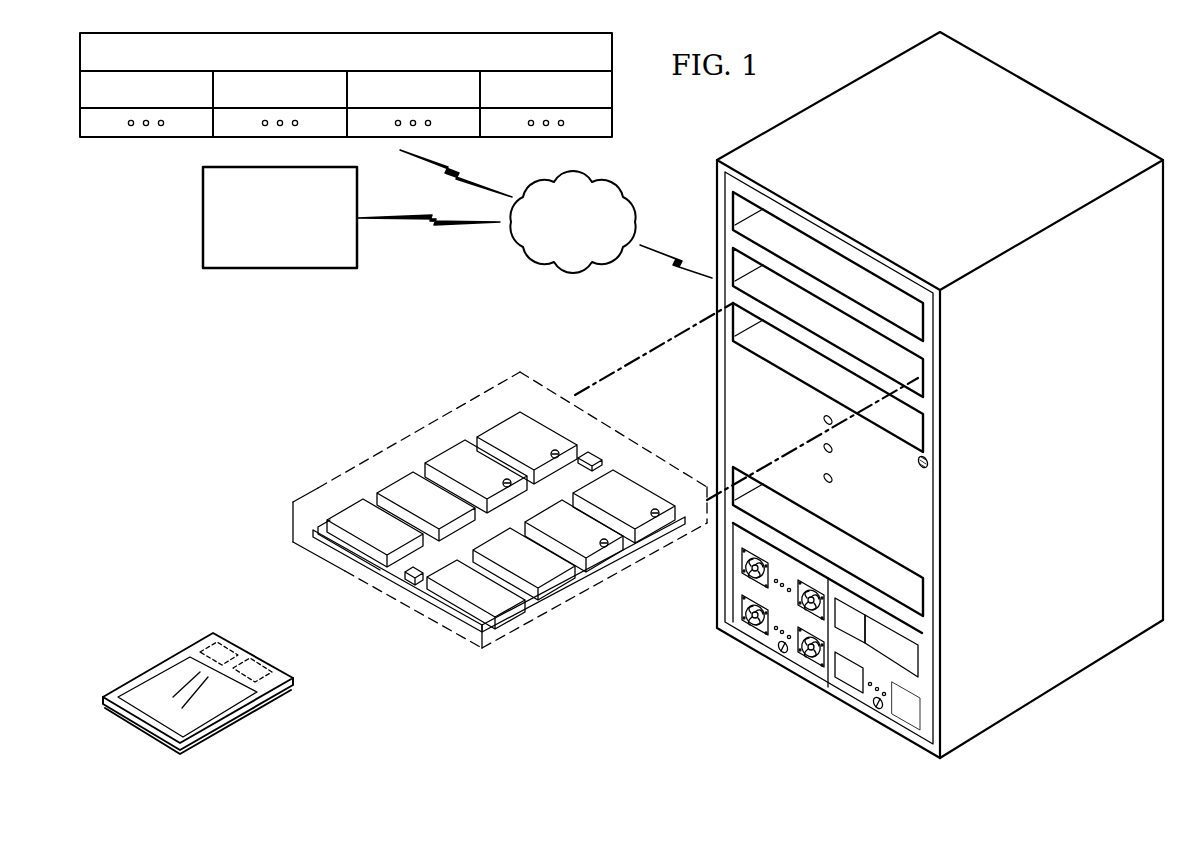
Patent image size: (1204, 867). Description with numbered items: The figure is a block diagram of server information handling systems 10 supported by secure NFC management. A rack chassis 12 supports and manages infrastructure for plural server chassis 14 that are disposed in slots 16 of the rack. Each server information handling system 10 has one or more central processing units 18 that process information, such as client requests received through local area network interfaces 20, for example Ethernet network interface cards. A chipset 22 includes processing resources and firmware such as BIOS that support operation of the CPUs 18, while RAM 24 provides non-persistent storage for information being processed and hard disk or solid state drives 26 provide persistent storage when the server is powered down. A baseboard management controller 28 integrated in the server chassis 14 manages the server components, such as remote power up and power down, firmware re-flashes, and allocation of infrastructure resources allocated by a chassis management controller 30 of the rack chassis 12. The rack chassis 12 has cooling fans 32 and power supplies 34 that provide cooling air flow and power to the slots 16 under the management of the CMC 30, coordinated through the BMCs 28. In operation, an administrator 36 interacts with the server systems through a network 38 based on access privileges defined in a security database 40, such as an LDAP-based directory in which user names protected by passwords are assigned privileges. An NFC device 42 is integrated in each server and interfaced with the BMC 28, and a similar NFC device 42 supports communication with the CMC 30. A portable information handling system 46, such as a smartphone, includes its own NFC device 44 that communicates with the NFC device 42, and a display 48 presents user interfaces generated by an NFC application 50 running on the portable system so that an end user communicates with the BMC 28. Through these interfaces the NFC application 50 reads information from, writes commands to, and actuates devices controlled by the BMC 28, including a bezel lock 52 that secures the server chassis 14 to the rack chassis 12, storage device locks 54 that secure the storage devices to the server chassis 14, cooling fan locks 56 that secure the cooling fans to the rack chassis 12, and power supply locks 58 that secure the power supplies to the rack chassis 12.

The server information handling system 10 is at (436, 498).
The rack chassis 12 is at (1094, 113).
The server chassis 14 is at (500, 487).
The slots 16 is at (847, 275).
The central processing unit 18 is at (344, 518).
The local area network interface 20 is at (397, 490).
The chipset 22 is at (593, 457).
The RAM 24 is at (566, 596).
The hard disk or solid state drive 26 is at (500, 432).
The baseboard management controller 28 is at (455, 608).
The chassis management controller 30 is at (903, 650).
The cooling fan 32 is at (742, 556).
The power supply 34 is at (908, 720).
The administrator 36 is at (269, 248).
The network 38 is at (562, 249).
The security database 40 is at (477, 61).
The NFC device 42 is at (372, 637).
The NFC device 44 is at (258, 660).
The portable information handling system 46 is at (229, 628).
The display 48 is at (173, 682).
The NFC application 50 is at (185, 539).
The bezel lock 52 is at (928, 462).
The storage device lock 54 is at (551, 450).
The cooling fan lock 56 is at (779, 647).
The power supply lock 58 is at (875, 702).